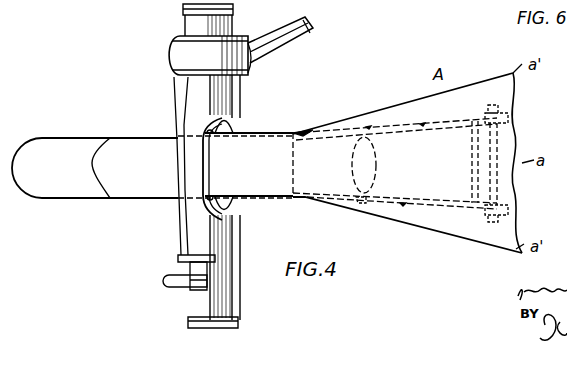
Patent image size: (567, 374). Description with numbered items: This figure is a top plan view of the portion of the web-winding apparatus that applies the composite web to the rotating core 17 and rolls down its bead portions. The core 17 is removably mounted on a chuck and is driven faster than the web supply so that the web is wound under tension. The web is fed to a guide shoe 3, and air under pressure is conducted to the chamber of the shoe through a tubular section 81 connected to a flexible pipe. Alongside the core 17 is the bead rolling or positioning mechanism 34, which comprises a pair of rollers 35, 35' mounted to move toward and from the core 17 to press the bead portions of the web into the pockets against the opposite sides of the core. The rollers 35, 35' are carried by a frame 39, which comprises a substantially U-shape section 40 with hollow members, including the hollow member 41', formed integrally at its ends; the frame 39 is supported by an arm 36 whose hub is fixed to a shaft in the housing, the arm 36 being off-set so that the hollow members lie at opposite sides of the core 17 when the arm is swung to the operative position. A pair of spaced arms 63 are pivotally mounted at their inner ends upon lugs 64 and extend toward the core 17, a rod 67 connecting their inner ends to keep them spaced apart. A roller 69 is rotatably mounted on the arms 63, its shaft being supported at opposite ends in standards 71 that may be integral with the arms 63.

The core 17 is at (72, 183).
The U-shape section 40 is at (178, 129).
The bead rolling or positioning mechanism 34 is at (223, 70).
The hollow member 41' is at (225, 166).
The arm 36 is at (310, 28).
The frame 39 is at (182, 204).
The roller 35 is at (234, 124).
The roller 35' is at (240, 209).
The guide shoe 3 is at (273, 150).
The tubular section 81 is at (313, 129).
The spaced arms 63 is at (430, 125).
The rod 67 is at (472, 175).
The roller 69 is at (368, 163).
The standards 71 is at (360, 198).
The lugs 64 is at (508, 113).